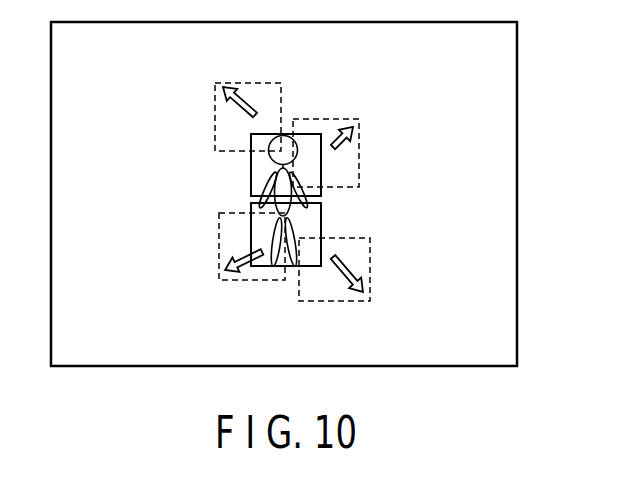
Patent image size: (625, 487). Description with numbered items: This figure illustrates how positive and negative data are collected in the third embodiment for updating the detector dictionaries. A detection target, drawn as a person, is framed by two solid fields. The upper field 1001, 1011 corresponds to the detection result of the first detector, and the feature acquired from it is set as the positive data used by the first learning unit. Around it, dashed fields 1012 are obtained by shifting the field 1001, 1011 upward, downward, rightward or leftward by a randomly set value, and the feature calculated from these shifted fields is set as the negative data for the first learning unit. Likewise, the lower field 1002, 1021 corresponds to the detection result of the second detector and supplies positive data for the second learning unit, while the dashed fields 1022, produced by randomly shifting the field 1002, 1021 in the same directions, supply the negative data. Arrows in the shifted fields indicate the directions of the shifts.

The field corresponding to the detection result of the first detector 1001 is at (209, 165).
The field corresponding to the detection result of the first detector 1011 is at (250, 178).
The shifted field for negative data of the first learning unit 1012 is at (313, 119).
The field corresponding to the detection result of the second detector 1002 is at (363, 233).
The field corresponding to the detection result of the second detector 1021 is at (322, 212).
The shifted field for negative data of the second learning unit 1022 is at (310, 301).